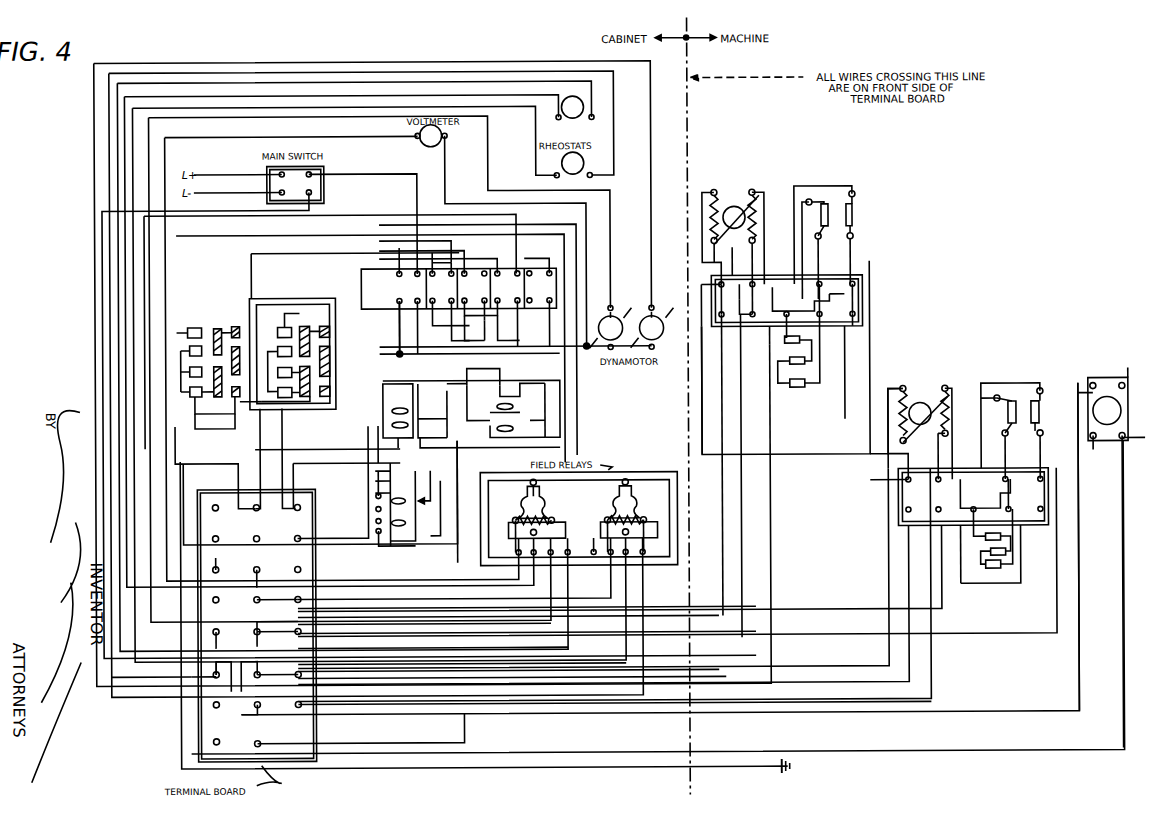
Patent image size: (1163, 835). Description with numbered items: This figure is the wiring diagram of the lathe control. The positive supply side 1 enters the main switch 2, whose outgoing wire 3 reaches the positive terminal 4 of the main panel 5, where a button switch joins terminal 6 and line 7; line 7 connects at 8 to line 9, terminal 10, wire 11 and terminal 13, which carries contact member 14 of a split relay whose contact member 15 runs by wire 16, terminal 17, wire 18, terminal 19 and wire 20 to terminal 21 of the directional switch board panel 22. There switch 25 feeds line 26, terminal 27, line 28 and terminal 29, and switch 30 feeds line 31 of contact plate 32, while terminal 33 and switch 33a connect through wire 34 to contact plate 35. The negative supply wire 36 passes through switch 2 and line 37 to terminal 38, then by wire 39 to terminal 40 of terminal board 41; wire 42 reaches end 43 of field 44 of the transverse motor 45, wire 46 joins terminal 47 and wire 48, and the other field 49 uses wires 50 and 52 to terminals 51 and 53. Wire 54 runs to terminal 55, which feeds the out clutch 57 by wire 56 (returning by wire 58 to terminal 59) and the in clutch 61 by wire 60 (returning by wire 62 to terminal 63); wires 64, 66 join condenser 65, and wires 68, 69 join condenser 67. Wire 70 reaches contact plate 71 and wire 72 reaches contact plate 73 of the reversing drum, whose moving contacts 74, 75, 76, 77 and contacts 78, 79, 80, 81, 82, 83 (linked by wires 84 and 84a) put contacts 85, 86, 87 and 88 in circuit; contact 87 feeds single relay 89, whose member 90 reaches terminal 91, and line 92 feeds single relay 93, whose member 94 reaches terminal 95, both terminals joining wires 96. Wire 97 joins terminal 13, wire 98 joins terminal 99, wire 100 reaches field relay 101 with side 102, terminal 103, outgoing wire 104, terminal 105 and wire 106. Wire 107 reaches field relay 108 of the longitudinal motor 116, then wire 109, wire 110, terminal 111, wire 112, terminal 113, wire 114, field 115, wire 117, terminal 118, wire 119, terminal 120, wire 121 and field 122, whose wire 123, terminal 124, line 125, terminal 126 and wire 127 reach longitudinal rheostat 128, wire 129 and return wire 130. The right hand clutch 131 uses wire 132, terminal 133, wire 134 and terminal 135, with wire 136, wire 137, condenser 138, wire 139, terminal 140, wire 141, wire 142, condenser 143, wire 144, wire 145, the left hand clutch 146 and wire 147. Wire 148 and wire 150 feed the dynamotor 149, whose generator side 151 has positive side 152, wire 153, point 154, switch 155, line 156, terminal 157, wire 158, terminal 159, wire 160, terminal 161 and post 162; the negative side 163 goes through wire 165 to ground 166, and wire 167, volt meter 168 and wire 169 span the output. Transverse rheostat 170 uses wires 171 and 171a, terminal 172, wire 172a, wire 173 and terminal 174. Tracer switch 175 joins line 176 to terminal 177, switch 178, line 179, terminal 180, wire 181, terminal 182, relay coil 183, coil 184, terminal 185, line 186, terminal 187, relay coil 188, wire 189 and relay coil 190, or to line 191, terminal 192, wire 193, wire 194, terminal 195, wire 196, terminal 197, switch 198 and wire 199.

The positive side of supply line 1 is at (232, 170).
The main switch 2 is at (304, 182).
The wire 3 is at (380, 170).
The positive terminal 4 is at (416, 262).
The main panel 5 is at (419, 287).
The terminal 6 is at (412, 324).
The line 7 is at (416, 333).
The connection point 8 is at (398, 350).
The line 9 is at (372, 354).
The terminal 10 is at (220, 646).
The wire 11 is at (220, 556).
The terminal 13 is at (418, 520).
The contact member 14 is at (414, 471).
The contact member 15 is at (421, 484).
The wire 16 is at (427, 554).
The terminal 17 is at (214, 704).
The wire 18 is at (200, 673).
The terminal 19 is at (217, 666).
The wire 20 is at (170, 669).
The terminal 21 is at (528, 276).
The switch board panel 22 is at (519, 282).
The switch 25 is at (519, 292).
The line 26 is at (501, 336).
The terminal 27 is at (485, 317).
The line 28 is at (487, 331).
The terminal 29 is at (477, 333).
The switch 30 is at (463, 290).
The line 31 is at (456, 244).
The contact plate 32 is at (192, 364).
The terminal 33 is at (491, 262).
The switch 33a is at (486, 280).
The wire 34 is at (253, 271).
The contact plate 35 is at (284, 367).
The main supply line wire 36 is at (222, 191).
The line 37 is at (101, 230).
The terminal 38 is at (252, 674).
The wire 39 is at (276, 664).
The terminal 40 is at (706, 336).
The terminal board 41 is at (780, 240).
The wire 42 is at (750, 262).
The field end 43 is at (728, 246).
The field 44 is at (714, 192).
The transverse motor 45 is at (742, 200).
The wire 46 is at (707, 193).
The terminal 47 is at (710, 286).
The wire 48 is at (340, 608).
The field 49 is at (760, 196).
The wire 50 is at (762, 222).
The terminal 51 is at (741, 292).
The wire 52 is at (760, 242).
The terminal 53 is at (762, 311).
The wire 54 is at (722, 336).
The terminal 55 is at (813, 294).
The wire 56 is at (813, 269).
The magnetic clutch 57 is at (824, 204).
The wire 58 is at (818, 242).
The terminal 59 is at (819, 284).
The wire 60 is at (800, 186).
The magnetic clutch 61 is at (856, 206).
The wire 62 is at (852, 246).
The terminal 63 is at (855, 276).
The wire 64 is at (848, 342).
The condenser 65 is at (811, 377).
The wire 66 is at (841, 353).
The condenser 67 is at (787, 360).
The wire 68 is at (820, 333).
The wire 69 is at (787, 344).
The wire 70 is at (322, 465).
The contact plate 71 is at (284, 380).
The wire 72 is at (254, 456).
The contact plate 73 is at (200, 324).
The moving contact member 74 is at (216, 323).
The moving contact member 75 is at (220, 401).
The moving contact member 76 is at (307, 324).
The moving contact member 77 is at (310, 399).
The contact member 78 is at (240, 325).
The contact member 79 is at (231, 346).
The contact member 80 is at (239, 386).
The contact member 81 is at (329, 324).
The contact member 82 is at (332, 346).
The contact member 83 is at (329, 387).
The wire 84 is at (293, 296).
The wire 84a is at (252, 398).
The contact member 85 is at (192, 366).
The contact member 86 is at (197, 386).
The contact member 87 is at (280, 324).
The wire 88 is at (280, 340).
The single relay 89 is at (530, 390).
The relay member 90 is at (533, 399).
The terminal 91 is at (537, 408).
The line 92 is at (234, 415).
The single relay 93 is at (398, 410).
The movable member 94 is at (419, 394).
The terminal 95 is at (436, 414).
The wires 96 is at (421, 420).
The wire 97 is at (420, 443).
The wire 98 is at (533, 431).
The terminal 99 is at (564, 546).
The wire 100 is at (553, 515).
The field relay 101 is at (546, 498).
The wire 102 is at (492, 493).
The terminal 103 is at (298, 611).
The out-going wire 104 is at (315, 636).
The terminal 105 is at (256, 633).
The wire 106 is at (337, 636).
The wire 107 is at (572, 555).
The field relay 108 is at (616, 507).
The wire 109 is at (662, 509).
The wire 110 is at (292, 582).
The terminal 111 is at (251, 599).
The wire 112 is at (256, 617).
The terminal 113 is at (954, 498).
The wire 114 is at (951, 433).
The field 115 is at (938, 388).
The longitudinal motor 116 is at (918, 370).
The wire 117 is at (938, 446).
The terminal 118 is at (934, 458).
The wire 119 is at (450, 703).
The terminal 120 is at (290, 704).
The wire 121 is at (304, 698).
The field 122 is at (642, 552).
The wire 123 is at (660, 493).
The terminal 124 is at (880, 481).
The line 125 is at (860, 663).
The terminal 126 is at (302, 667).
The wire 127 is at (132, 120).
The longitudinal rheostat 128 is at (541, 159).
The wire 129 is at (108, 112).
The wire 130 is at (860, 683).
The right hand magnetic clutch 131 is at (1030, 399).
The wire 132 is at (985, 397).
The terminal 133 is at (1020, 500).
The wire 134 is at (1013, 441).
The terminal 135 is at (1013, 453).
The wire 136 is at (266, 444).
The wire 137 is at (1024, 548).
The condenser 138 is at (997, 573).
The wire 139 is at (1014, 584).
The terminal 140 is at (1041, 462).
The wire 141 is at (183, 474).
The wire 142 is at (954, 472).
The condenser 143 is at (978, 550).
The wire 144 is at (1009, 527).
The wire 145 is at (988, 386).
The left hand magnetic clutch 146 is at (1041, 400).
The wire 147 is at (1043, 443).
The wire 148 is at (614, 367).
The dynamotor 149 is at (656, 314).
The wire 150 is at (95, 146).
The generator side connection 151 is at (616, 309).
The positive side 152 is at (615, 347).
The wire 153 is at (556, 345).
The terminal 154 is at (396, 299).
The switch 155 is at (396, 286).
The line 156 is at (402, 235).
The terminal 157 is at (496, 410).
The wire 158 is at (434, 391).
The terminal 159 is at (396, 405).
The wire 160 is at (368, 433).
The terminal 161 is at (376, 508).
The supplementary terminal post 162 is at (376, 493).
The negative side of generator 163 is at (166, 114).
The wire 165 is at (180, 742).
The ground 166 is at (779, 768).
The wire 167 is at (179, 133).
The volt meter 168 is at (434, 146).
The wire 169 is at (447, 183).
The transverse motor rheostat 170 is at (588, 114).
The wire 171 is at (117, 163).
The wire 171a is at (124, 180).
The terminal 172 is at (300, 642).
The wire 172a is at (550, 622).
The wire 173 is at (302, 596).
The terminal 174 is at (526, 548).
The tracer switch 175 is at (556, 291).
The line 176 is at (531, 255).
The terminal 177 is at (433, 276).
The switch 178 is at (432, 290).
The line 179 is at (429, 339).
The terminal 180 is at (396, 436).
The wire 181 is at (388, 471).
The terminal 182 is at (388, 482).
The relay coil 183 is at (388, 494).
The coil 184 is at (417, 533).
The terminal 185 is at (376, 520).
The line 186 is at (491, 431).
The terminal 187 is at (478, 418).
The relay coil 188 is at (509, 399).
The wire 189 is at (480, 368).
The relay coil 190 is at (398, 420).
The line 191 is at (415, 745).
The terminal 192 is at (1106, 456).
The wire 193 is at (1140, 444).
The wire 194 is at (1146, 348).
The terminal 195 is at (978, 382).
The wire 196 is at (494, 248).
The terminal 197 is at (456, 256).
The switch 198 is at (443, 300).
The wire 199 is at (470, 322).